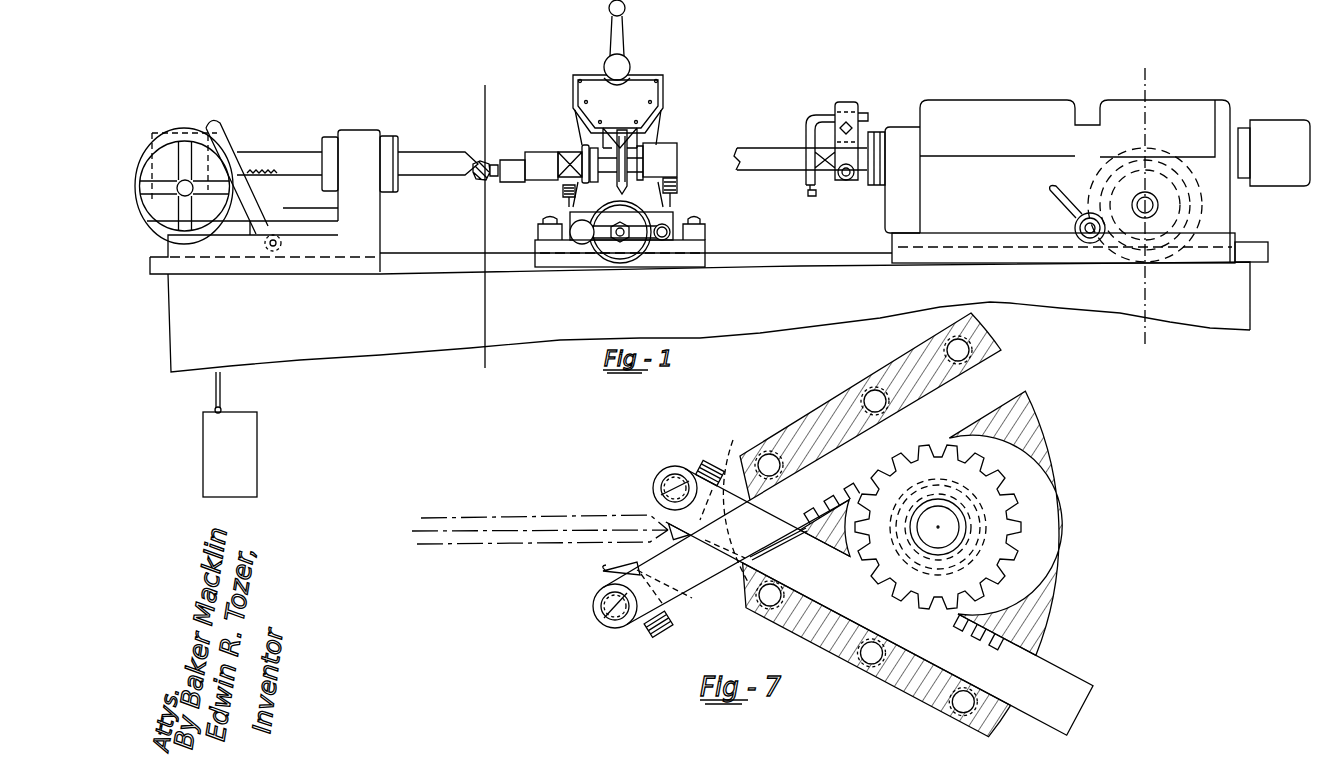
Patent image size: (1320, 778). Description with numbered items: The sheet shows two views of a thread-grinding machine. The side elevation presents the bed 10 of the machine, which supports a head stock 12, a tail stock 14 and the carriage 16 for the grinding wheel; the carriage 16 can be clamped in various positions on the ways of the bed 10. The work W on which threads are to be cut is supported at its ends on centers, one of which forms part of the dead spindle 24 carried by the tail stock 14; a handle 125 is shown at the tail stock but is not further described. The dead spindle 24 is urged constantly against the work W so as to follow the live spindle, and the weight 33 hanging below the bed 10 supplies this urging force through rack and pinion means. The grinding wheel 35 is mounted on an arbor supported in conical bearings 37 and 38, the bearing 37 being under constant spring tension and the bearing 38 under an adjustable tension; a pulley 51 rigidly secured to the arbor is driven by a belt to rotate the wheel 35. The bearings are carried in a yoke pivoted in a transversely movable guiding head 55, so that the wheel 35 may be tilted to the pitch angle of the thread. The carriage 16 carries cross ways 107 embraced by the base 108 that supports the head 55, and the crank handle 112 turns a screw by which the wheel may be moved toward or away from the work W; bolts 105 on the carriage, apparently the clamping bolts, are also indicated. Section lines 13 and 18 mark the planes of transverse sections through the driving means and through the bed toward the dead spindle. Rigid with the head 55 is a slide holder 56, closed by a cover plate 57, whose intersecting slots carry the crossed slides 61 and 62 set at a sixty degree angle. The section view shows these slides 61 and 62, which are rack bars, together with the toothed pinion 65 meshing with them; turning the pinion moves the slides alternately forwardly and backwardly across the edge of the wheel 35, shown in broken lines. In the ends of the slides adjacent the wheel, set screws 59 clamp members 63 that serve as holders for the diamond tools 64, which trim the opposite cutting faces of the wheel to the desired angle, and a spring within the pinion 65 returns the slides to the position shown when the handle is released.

In FIG. 1, the bed 10 is at (700, 303).
In FIG. 1, the head stock 12 is at (1097, 181).
In FIG. 1, the section line 13— 13 is at (1153, 344).
In FIG. 1, the tail stock 14 is at (272, 201).
In FIG. 1, the carriage 16 is at (620, 250).
In FIG. 1, the section line 18— 18 is at (492, 369).
In FIG. 1, the dead spindle 24 is at (438, 163).
In FIG. 1, the weight 33 is at (246, 445).
In FIG. 1, the grinding wheel 35 is at (617, 138).
In FIG. 7, the grinding wheel 35 is at (513, 527).
In FIG. 1, the conical bearing 37 is at (660, 160).
In FIG. 1, the conical bearing 38 is at (541, 166).
In FIG. 1, the pulley 51 is at (582, 156).
In FIG. 1, the guiding head 55 is at (648, 125).
In FIG. 7, the slide holder 56 is at (1041, 419).
In FIG. 1, the cover plate 57 is at (618, 114).
In FIG. 7, the set screws 59 is at (610, 622).
In FIG. 7, the slide 61 is at (871, 406).
In FIG. 7, the slide 62 is at (879, 602).
In FIG. 7, the clamp pawl 63 is at (660, 632).
In FIG. 7, the diamond tools 64 is at (684, 534).
In FIG. 7, the toothed pinion 65 is at (982, 490).
In FIG. 1, the clamp bolts 105 is at (700, 222).
In FIG. 1, the cross ways 107 is at (670, 222).
In FIG. 1, the base 108 is at (574, 217).
In FIG. 1, the crank handle 112 is at (662, 244).
In FIG. 1, the tailstock lever 125 is at (220, 137).
In FIG. 1, the work W is at (753, 150).